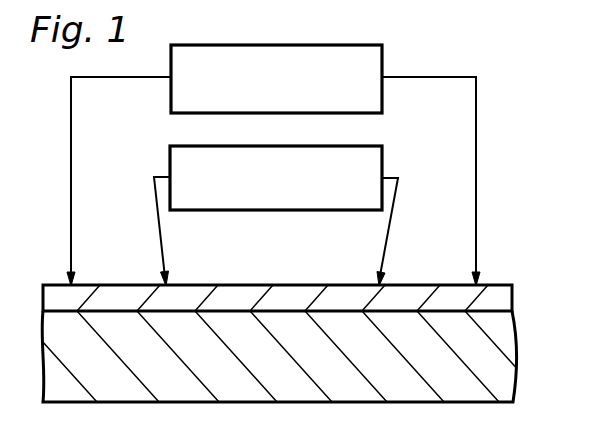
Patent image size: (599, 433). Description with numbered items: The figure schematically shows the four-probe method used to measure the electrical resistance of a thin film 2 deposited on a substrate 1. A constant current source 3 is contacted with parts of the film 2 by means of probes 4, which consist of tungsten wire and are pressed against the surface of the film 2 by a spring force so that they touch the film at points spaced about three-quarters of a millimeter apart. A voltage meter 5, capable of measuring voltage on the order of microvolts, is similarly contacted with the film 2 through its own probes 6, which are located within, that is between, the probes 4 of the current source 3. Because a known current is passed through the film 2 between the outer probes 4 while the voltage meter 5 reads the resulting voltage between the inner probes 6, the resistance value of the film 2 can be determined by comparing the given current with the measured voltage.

The substrate 1 is at (505, 352).
The film 2 is at (503, 303).
The constant current source 3 is at (384, 56).
The probes 4 is at (477, 200).
The voltage meter 5 is at (384, 155).
The probes 6 is at (398, 200).